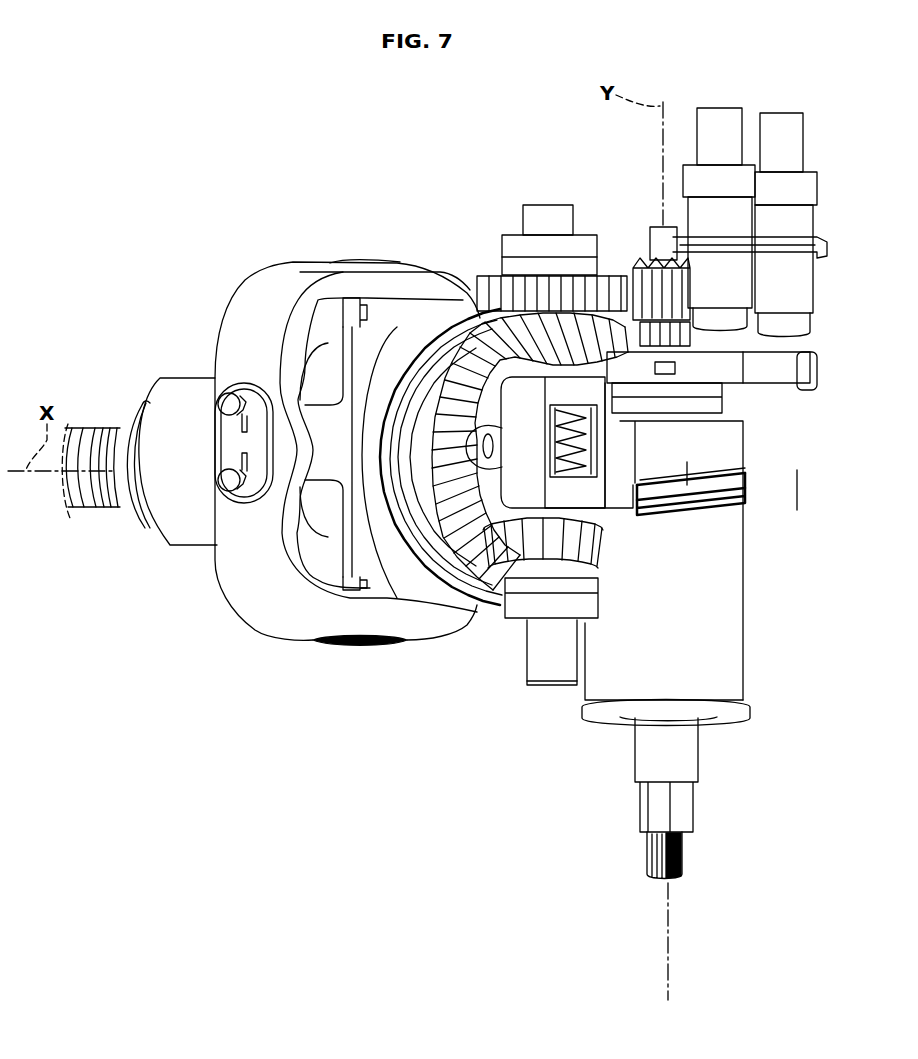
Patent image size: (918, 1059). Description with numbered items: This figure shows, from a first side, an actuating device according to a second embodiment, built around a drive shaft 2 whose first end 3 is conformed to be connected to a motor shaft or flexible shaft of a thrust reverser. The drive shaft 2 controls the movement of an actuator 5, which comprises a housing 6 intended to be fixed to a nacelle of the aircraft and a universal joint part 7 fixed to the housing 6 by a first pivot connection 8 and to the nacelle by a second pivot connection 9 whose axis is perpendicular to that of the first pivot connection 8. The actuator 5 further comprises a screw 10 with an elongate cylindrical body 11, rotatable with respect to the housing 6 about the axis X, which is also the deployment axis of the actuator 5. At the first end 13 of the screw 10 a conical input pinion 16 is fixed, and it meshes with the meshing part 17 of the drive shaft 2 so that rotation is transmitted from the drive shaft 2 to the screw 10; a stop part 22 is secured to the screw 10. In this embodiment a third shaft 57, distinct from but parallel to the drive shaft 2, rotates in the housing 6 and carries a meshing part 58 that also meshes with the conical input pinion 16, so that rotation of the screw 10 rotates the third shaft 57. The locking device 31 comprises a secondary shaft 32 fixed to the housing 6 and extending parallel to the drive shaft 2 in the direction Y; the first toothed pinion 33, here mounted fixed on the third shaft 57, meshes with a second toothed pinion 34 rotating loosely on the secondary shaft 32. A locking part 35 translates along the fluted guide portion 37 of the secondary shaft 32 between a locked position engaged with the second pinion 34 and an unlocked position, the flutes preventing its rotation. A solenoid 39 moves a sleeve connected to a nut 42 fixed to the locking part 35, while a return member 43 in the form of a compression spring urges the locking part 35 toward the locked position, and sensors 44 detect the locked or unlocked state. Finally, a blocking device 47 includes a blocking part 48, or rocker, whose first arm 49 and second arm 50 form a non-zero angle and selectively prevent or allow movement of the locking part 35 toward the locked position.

The drive shaft 2 is at (537, 655).
The first end 3 is at (552, 686).
The actuator 5 is at (152, 356).
The housing 6 is at (380, 578).
The universal joint part 7 is at (243, 590).
The first pivot connection 8 is at (222, 430).
The second pivot connection 9 is at (350, 262).
The screw 10 is at (90, 503).
The body 11 is at (90, 432).
The first end 13 is at (487, 420).
The conical input pinion 16 is at (492, 422).
The meshing part 17 is at (505, 578).
The stop part 22 is at (134, 412).
The locking device 31 is at (752, 555).
The secondary shaft 32 is at (683, 807).
The first toothed pinion 33 is at (502, 292).
The second toothed pinion 34 is at (652, 290).
The locking part 35 is at (637, 368).
The fluted guide portion 37 is at (653, 336).
The solenoid 39 is at (727, 648).
The nut 42 is at (745, 473).
The return member 43 is at (813, 372).
The sensors 44 is at (718, 117).
The blocking device 47 is at (797, 470).
The blocking part 48 is at (653, 457).
The first arm 49 is at (687, 462).
The second arm 50 is at (466, 488).
The third shaft 57 is at (538, 218).
The meshing part 58 is at (545, 335).